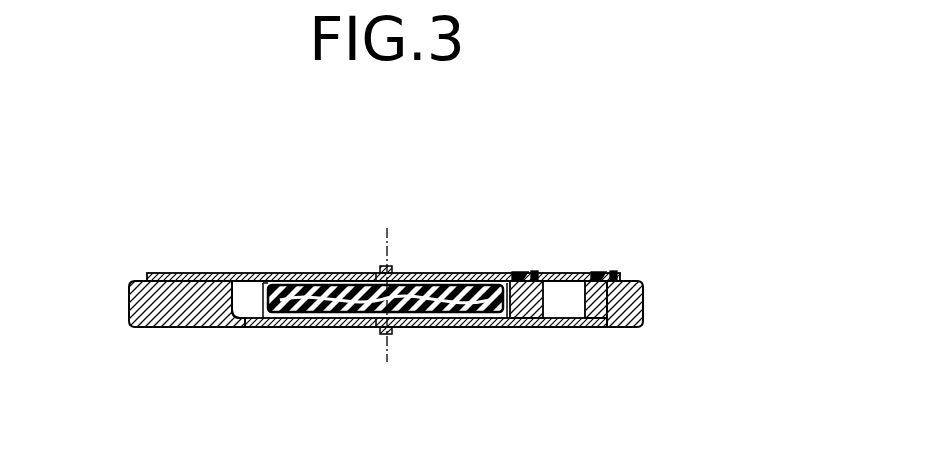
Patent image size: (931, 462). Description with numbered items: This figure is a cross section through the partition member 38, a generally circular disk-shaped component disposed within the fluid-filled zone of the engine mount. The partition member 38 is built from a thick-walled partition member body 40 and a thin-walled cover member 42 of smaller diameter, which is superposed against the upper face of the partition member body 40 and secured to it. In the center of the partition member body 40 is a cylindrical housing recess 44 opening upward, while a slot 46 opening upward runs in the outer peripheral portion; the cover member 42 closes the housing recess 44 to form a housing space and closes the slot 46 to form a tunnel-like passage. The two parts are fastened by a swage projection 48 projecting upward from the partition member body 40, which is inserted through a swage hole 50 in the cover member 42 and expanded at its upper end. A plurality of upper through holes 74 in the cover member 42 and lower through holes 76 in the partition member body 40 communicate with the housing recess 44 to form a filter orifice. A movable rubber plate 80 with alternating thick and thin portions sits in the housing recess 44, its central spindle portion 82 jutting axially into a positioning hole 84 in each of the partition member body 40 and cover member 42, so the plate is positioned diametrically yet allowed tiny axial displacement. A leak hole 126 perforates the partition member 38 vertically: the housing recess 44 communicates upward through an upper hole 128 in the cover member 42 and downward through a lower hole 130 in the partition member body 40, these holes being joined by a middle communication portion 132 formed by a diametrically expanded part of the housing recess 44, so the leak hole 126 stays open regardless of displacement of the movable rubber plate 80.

The partition member 38 is at (128, 256).
The partition member body 40 is at (172, 314).
The cover member 42 is at (226, 272).
The housing recess 44 is at (424, 304).
The slot 46 is at (577, 318).
The swage projection 48 is at (522, 272).
The swage hole 50 is at (527, 322).
The upper through holes 74 is at (302, 271).
The lower through holes 76 is at (338, 325).
The movable rubber plate 80 is at (455, 284).
The spindle portion 82 is at (378, 275).
The positioning hole 84 is at (391, 270).
The leak hole 126 is at (273, 276).
The upper hole 128 is at (267, 273).
The lower hole 130 is at (267, 326).
The middle communication portion 132 is at (245, 322).